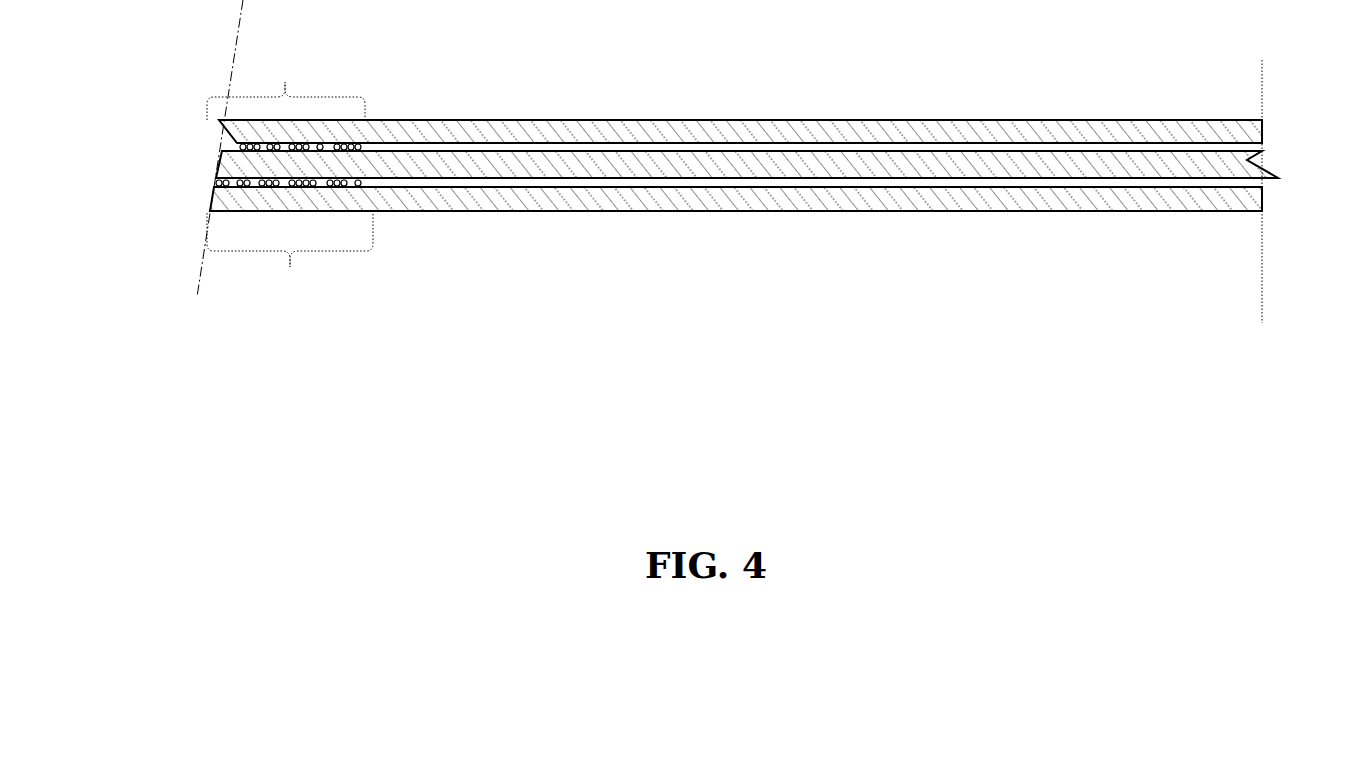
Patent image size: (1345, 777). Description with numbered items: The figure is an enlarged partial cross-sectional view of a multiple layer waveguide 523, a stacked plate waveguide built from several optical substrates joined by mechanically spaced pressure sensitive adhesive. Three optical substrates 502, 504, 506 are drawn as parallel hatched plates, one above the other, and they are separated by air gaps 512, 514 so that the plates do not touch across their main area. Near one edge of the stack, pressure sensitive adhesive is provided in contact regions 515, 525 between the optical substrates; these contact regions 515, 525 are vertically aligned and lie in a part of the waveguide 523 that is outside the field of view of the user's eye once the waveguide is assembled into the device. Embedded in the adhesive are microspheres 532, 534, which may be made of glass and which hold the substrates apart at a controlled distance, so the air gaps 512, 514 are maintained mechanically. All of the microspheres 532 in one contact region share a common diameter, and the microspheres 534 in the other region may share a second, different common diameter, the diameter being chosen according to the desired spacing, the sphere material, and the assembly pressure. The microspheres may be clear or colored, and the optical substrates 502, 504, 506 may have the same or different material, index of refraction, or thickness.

The optical substrate 502 is at (1253, 132).
The optical substrate 504 is at (1255, 178).
The optical substrate 506 is at (1133, 195).
The air gap 512 is at (703, 148).
The air gap 514 is at (732, 183).
The contact region 515 is at (286, 85).
The multiple layer waveguide 523 is at (718, 189).
The contact region 525 is at (290, 257).
The microspheres 532 is at (240, 148).
The microspheres 534 is at (237, 187).